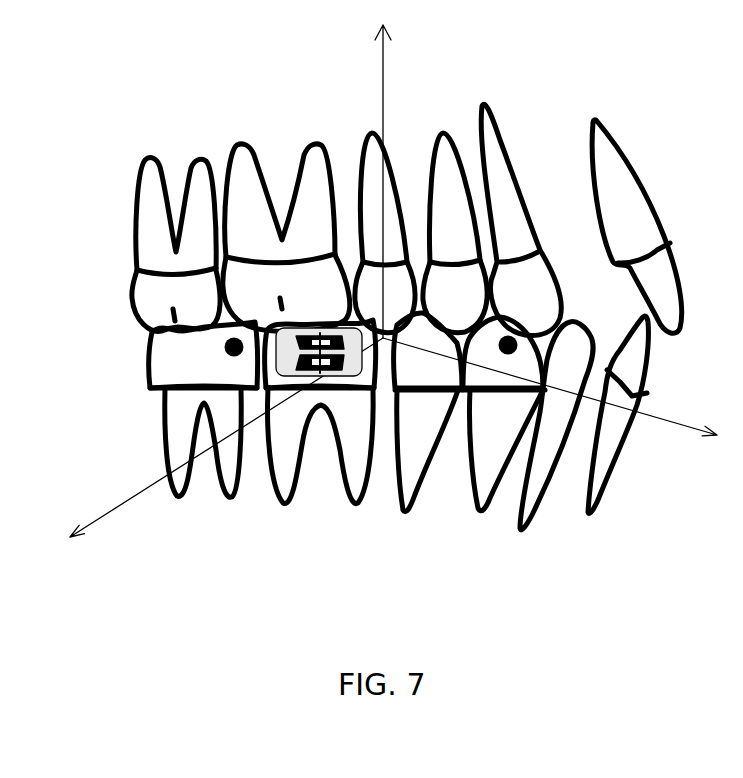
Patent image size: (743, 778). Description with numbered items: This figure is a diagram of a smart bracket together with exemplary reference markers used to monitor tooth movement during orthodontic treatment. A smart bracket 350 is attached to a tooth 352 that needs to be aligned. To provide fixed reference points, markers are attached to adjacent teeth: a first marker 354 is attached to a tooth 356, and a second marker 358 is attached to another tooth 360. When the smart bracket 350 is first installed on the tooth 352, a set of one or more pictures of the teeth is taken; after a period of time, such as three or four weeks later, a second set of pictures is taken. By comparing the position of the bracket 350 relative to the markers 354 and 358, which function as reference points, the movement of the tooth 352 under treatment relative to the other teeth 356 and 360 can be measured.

The smart bracket 350 is at (357, 382).
The tooth 352 is at (296, 420).
The first marker 354 is at (228, 352).
The tooth 356 is at (186, 412).
The second marker 358 is at (510, 358).
The tooth 360 is at (492, 452).